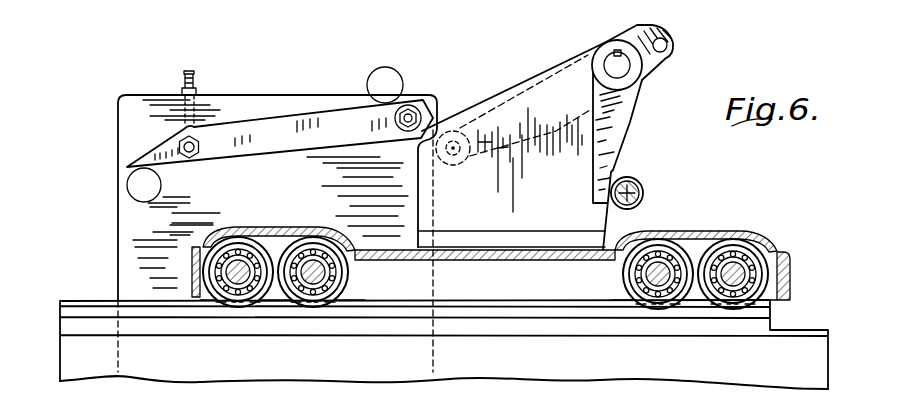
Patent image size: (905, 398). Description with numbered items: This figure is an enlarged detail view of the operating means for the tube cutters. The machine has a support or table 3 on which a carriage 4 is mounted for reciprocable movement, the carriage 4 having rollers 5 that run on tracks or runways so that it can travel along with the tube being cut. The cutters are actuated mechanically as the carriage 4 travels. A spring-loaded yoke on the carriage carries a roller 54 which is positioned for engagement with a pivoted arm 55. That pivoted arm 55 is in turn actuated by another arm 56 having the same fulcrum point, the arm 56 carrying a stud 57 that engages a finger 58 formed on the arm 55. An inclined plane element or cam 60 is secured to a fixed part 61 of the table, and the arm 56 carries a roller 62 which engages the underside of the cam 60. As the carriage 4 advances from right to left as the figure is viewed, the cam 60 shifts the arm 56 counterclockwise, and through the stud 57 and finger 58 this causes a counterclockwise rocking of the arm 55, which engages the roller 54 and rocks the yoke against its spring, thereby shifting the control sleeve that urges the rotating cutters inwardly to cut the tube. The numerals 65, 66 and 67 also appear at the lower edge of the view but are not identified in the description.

The support or table 3 is at (388, 358).
The carriage 4 is at (317, 305).
The rollers 5 is at (256, 298).
The roller 54 is at (639, 182).
The pivoted arm 55 is at (633, 111).
The arm 56 is at (544, 70).
The stud 57 is at (667, 45).
The finger 58 is at (656, 35).
The inclined plane element or cam 60 is at (297, 123).
The fixed part 61 is at (243, 103).
The roller 62 is at (453, 115).
The base member 65 is at (460, 380).
The base member 66 is at (502, 384).
The base member 67 is at (537, 383).